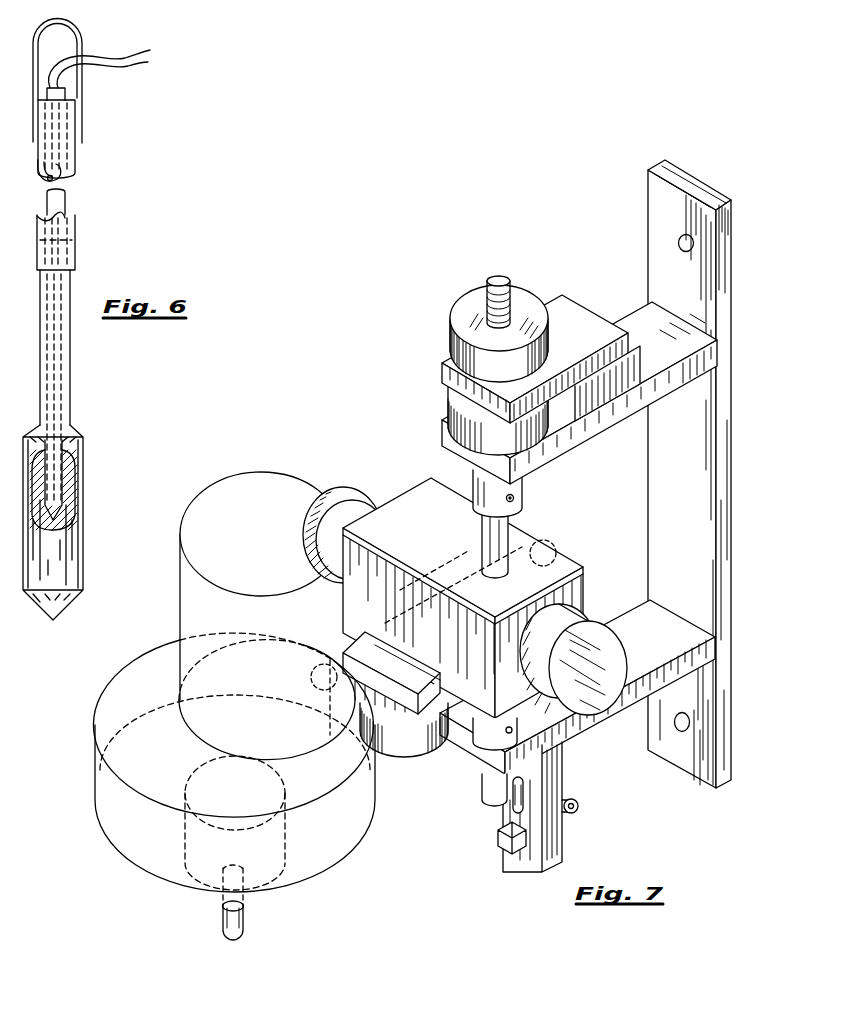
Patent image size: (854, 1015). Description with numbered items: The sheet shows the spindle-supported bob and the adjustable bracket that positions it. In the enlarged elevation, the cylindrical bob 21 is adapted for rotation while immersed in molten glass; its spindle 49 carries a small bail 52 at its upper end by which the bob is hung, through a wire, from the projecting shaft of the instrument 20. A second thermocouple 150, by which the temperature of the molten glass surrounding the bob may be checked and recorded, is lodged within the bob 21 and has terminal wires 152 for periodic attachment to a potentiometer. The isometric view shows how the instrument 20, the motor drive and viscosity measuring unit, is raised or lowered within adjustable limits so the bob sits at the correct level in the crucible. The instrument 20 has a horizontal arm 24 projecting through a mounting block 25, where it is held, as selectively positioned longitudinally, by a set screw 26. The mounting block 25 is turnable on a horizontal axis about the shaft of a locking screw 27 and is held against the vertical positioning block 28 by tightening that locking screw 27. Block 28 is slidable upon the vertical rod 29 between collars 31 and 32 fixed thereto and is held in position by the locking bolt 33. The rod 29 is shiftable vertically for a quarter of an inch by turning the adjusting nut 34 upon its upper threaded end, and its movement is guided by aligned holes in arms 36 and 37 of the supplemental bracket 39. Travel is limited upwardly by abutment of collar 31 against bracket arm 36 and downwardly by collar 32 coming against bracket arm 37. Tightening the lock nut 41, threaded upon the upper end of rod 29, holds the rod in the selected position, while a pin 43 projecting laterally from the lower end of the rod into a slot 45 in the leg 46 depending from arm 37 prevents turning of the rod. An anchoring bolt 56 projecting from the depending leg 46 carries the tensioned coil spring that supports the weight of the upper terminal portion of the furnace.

In FIG. 6, the bail 52 is at (94, 99).
In FIG. 6, the terminal wires 152 is at (116, 66).
In FIG. 6, the spindle 49 is at (72, 372).
In FIG. 6, the second thermocouple 150 is at (60, 502).
In FIG. 6, the cylindrical bob 21 is at (80, 568).
In FIG. 7, the instrument 20 is at (275, 472).
In FIG. 7, the horizontal arm 24 is at (578, 558).
In FIG. 7, the mounting block 25 is at (428, 480).
In FIG. 7, the set screw 26 is at (420, 760).
In FIG. 7, the locking screw 27 is at (370, 473).
In FIG. 7, the vertical positioning block 28 is at (483, 586).
In FIG. 7, the vertical rod 29 is at (506, 522).
In FIG. 7, the collar 31 is at (470, 482).
In FIG. 7, the collar 32 is at (488, 730).
In FIG. 7, the locking bolt 33 is at (586, 613).
In FIG. 7, the adjusting nut 34 is at (447, 402).
In FIG. 7, the bracket arm 36 is at (645, 312).
In FIG. 7, the bracket arm 37 is at (641, 705).
In FIG. 7, the supplemental bracket 39 is at (660, 210).
In FIG. 7, the lock nut 41 is at (460, 306).
In FIG. 7, the pin 43 is at (488, 792).
In FIG. 7, the slot 45 is at (498, 838).
In FIG. 7, the leg 46 is at (552, 870).
In FIG. 7, the anchoring bolt 56 is at (575, 812).